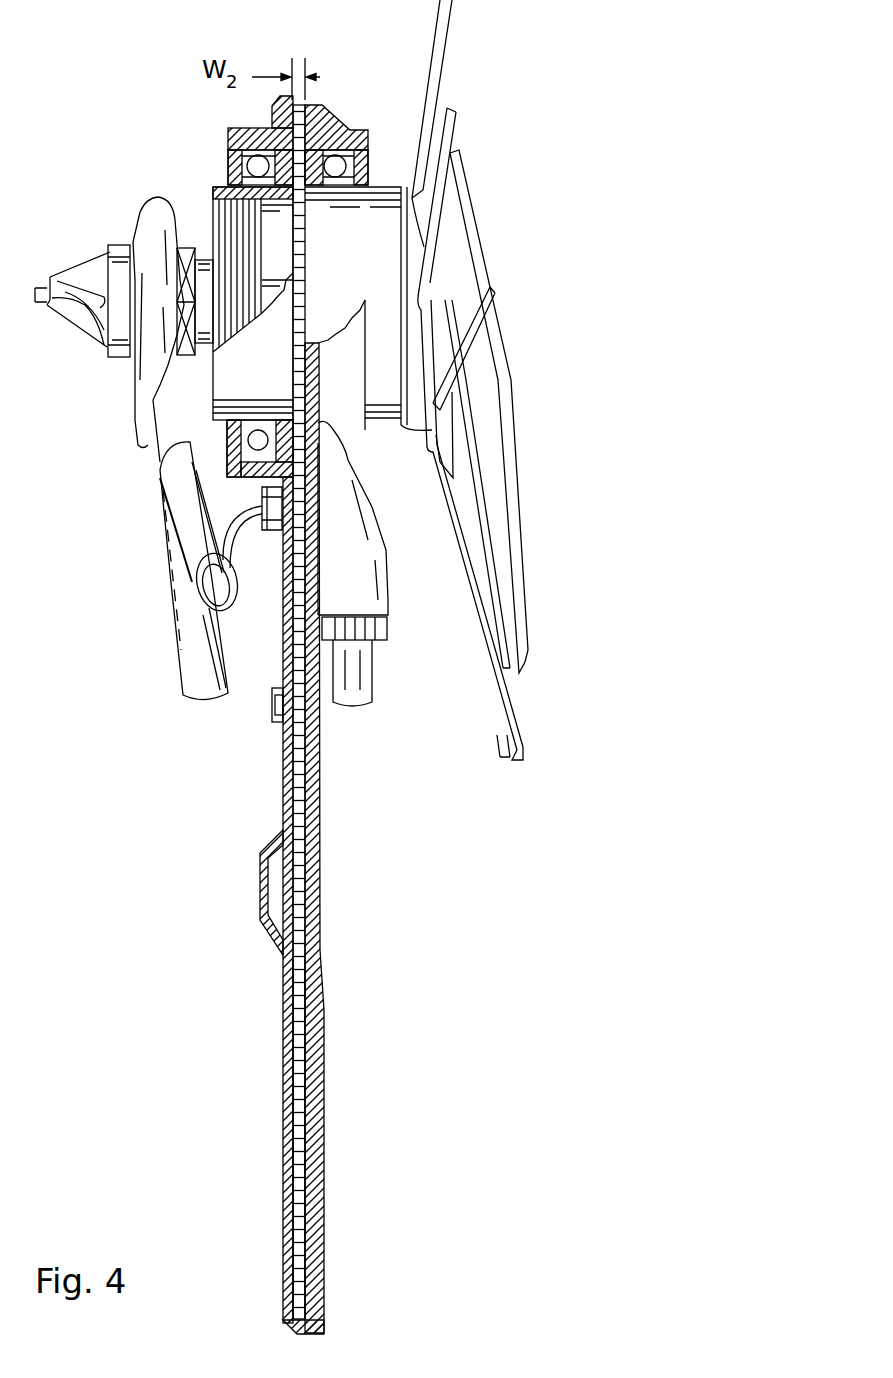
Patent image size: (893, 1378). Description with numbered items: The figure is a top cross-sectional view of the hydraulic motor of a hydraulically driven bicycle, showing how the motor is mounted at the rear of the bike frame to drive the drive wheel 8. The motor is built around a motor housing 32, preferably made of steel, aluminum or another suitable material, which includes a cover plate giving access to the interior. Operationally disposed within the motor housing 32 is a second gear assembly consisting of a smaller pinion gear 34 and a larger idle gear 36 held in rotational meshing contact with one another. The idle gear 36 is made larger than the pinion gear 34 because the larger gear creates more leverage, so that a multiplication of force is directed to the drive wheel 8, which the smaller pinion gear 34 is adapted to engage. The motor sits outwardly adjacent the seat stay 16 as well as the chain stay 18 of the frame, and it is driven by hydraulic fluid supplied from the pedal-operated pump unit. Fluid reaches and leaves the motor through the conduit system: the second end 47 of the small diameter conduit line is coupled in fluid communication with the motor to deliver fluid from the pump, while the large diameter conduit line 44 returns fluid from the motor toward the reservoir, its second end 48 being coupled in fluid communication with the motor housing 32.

The drive wheel 8 is at (445, 145).
The seat stay 16 is at (193, 500).
The chain stay 18 is at (193, 643).
The motor housing 32 is at (327, 128).
The smaller pinion gear 34 is at (302, 105).
The larger idle gear 36 is at (300, 1013).
The large diameter conduit line 44 is at (397, 584).
The second end of the small diameter conduit line 47 is at (240, 527).
The second end of the large diameter conduit line 48 is at (352, 673).